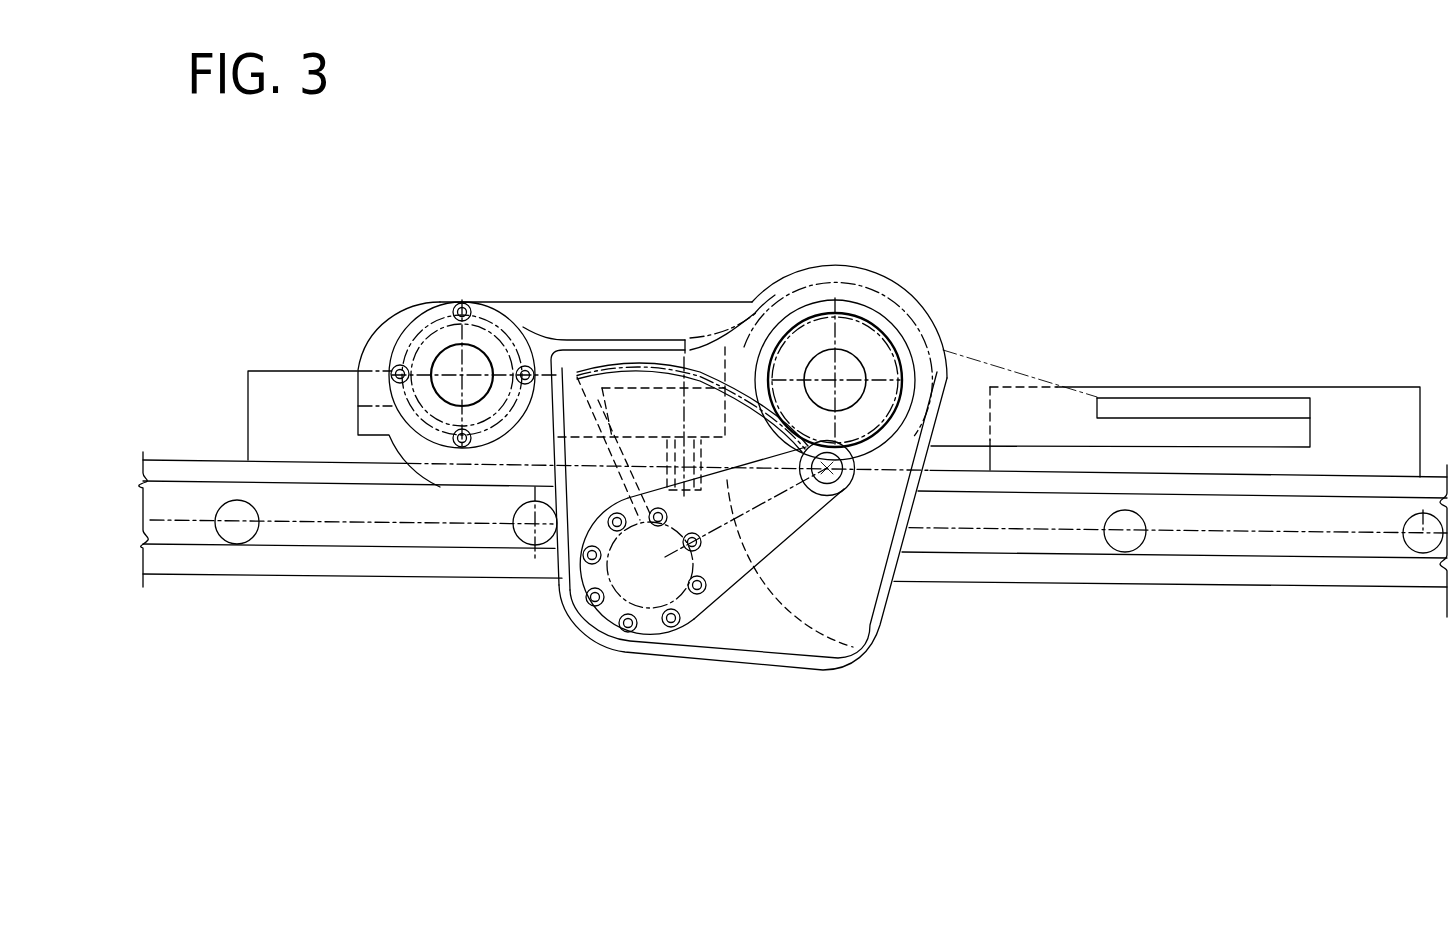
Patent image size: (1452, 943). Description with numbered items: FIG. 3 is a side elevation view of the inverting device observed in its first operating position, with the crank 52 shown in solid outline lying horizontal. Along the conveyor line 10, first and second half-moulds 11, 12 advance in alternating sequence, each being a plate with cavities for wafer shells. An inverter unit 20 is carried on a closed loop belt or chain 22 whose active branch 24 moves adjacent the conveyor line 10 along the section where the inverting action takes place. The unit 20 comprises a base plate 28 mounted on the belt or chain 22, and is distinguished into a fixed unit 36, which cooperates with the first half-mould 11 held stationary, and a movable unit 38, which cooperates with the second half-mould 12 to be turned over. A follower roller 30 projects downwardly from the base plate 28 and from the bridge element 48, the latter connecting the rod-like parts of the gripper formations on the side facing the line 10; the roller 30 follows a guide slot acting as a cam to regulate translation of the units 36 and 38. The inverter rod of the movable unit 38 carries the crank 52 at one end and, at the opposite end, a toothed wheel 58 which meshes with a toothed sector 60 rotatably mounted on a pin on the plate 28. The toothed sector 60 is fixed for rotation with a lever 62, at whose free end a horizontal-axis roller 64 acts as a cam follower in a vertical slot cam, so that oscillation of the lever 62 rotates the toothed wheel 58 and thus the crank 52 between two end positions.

The conveyor line 10 is at (183, 459).
The first half-mould 11 is at (293, 393).
The second half-mould 12 is at (1340, 407).
The inverter unit 20 is at (513, 597).
The closed loop belt or chain 22 is at (1218, 588).
The active branch 24 is at (1037, 512).
The base plate 28 is at (538, 447).
The follower roller 30 is at (856, 650).
The fixed unit 36 is at (438, 307).
The movable unit 38 is at (847, 349).
The bridge element 48 is at (663, 325).
The crank 52 is at (968, 388).
The toothed wheel 58 is at (893, 341).
The toothed sector 60 is at (653, 396).
The lever 62 is at (730, 553).
The roller 64 is at (848, 482).